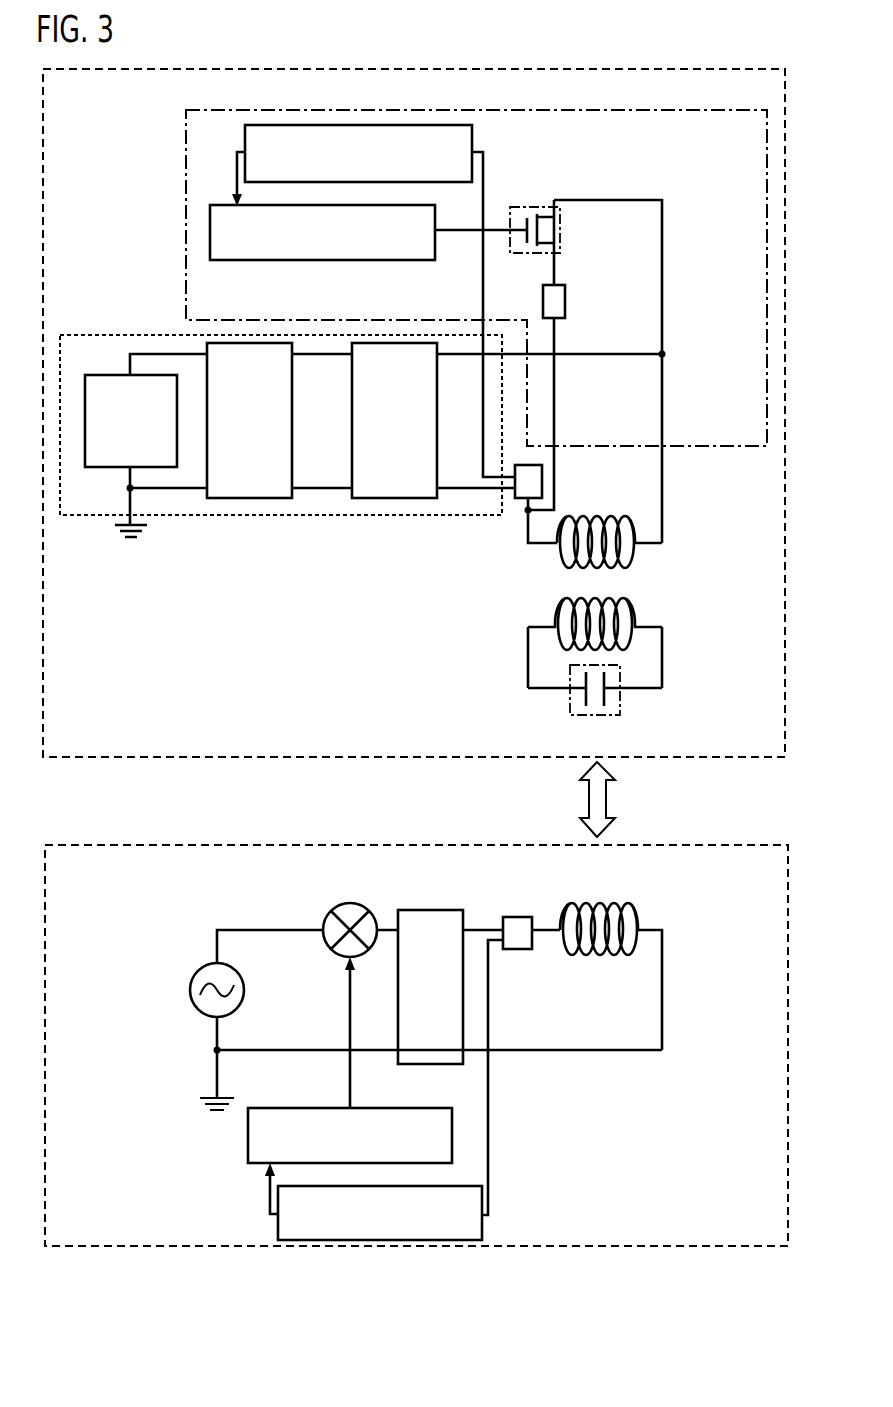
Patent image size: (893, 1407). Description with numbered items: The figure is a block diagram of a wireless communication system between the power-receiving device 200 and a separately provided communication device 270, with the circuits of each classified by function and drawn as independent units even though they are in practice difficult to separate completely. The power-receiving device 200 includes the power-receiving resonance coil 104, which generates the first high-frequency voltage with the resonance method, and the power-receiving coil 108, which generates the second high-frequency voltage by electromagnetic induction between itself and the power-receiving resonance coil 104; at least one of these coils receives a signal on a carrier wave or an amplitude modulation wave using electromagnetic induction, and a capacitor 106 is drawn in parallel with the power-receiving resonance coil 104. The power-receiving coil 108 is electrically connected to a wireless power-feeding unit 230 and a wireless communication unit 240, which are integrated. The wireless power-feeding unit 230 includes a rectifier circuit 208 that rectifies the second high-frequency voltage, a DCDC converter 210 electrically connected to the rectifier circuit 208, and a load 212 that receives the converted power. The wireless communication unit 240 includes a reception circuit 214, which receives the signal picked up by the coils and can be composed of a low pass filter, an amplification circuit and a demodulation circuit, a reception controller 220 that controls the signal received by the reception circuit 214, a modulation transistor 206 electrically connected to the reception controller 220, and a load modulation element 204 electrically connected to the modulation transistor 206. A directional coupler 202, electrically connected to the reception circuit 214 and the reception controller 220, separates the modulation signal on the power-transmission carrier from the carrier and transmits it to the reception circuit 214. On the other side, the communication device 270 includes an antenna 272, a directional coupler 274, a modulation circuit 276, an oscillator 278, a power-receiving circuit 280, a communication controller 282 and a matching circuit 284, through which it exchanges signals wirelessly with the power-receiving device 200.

The power-receiving device 200 is at (103, 122).
The wireless communication unit 240 is at (186, 247).
The wireless power-feeding unit 230 is at (107, 335).
The reception circuit 214 is at (373, 301).
The reception controller 220 is at (368, 232).
The modulation transistor 206 is at (560, 230).
The load modulation element 204 is at (566, 302).
The directional coupler 202 is at (542, 476).
The load 212 is at (146, 445).
The DCDC converter 210 is at (279, 420).
The rectifier circuit 208 is at (509, 420).
The power-receiving coil 108 is at (636, 530).
The power-receiving resonance coil 104 is at (636, 612).
The resonance capacitor 106 is at (620, 677).
The communication device 270 is at (131, 1232).
The oscillator 278 is at (200, 966).
The modulation circuit 276 is at (344, 906).
The matching circuit 284 is at (439, 987).
The directional coupler 274 is at (503, 920).
The antenna 272 is at (632, 937).
The communication controller 282 is at (350, 1135).
The power-receiving circuit 280 is at (373, 1201).